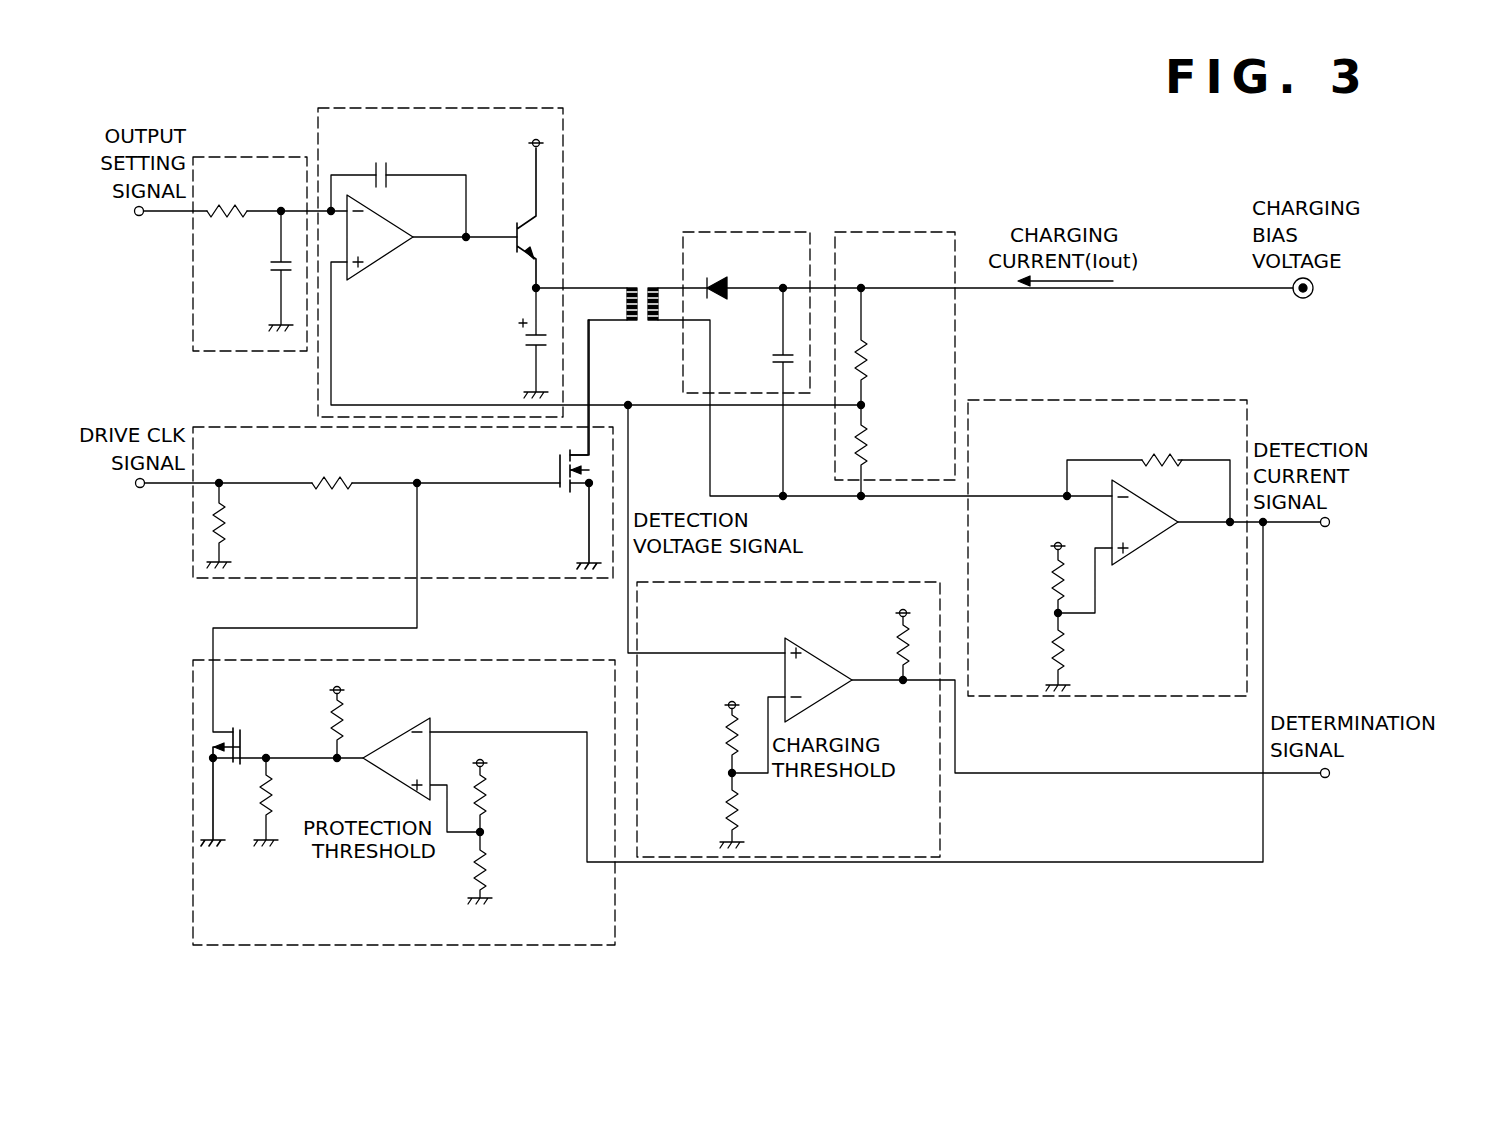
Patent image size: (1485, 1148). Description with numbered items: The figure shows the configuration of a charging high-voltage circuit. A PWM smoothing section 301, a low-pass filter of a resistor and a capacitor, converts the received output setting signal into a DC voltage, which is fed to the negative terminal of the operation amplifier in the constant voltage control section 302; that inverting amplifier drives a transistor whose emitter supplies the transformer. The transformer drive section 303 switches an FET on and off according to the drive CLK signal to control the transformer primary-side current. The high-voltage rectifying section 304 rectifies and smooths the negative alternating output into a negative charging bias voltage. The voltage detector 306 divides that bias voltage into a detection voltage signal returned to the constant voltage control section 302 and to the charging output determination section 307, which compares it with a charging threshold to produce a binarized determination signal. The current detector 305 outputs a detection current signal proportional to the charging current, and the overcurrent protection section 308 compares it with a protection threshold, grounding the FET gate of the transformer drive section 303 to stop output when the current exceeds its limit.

The PWM smoothing section 301 is at (283, 157).
The constant voltage control section 302 is at (563, 132).
The transformer drive section 303 is at (218, 427).
The high-voltage rectifying section 304 is at (745, 232).
The current detector 305 is at (1072, 401).
The voltage detector 306 is at (900, 232).
The charging output determination section 307 is at (875, 582).
The overcurrent protection section 308 is at (512, 661).